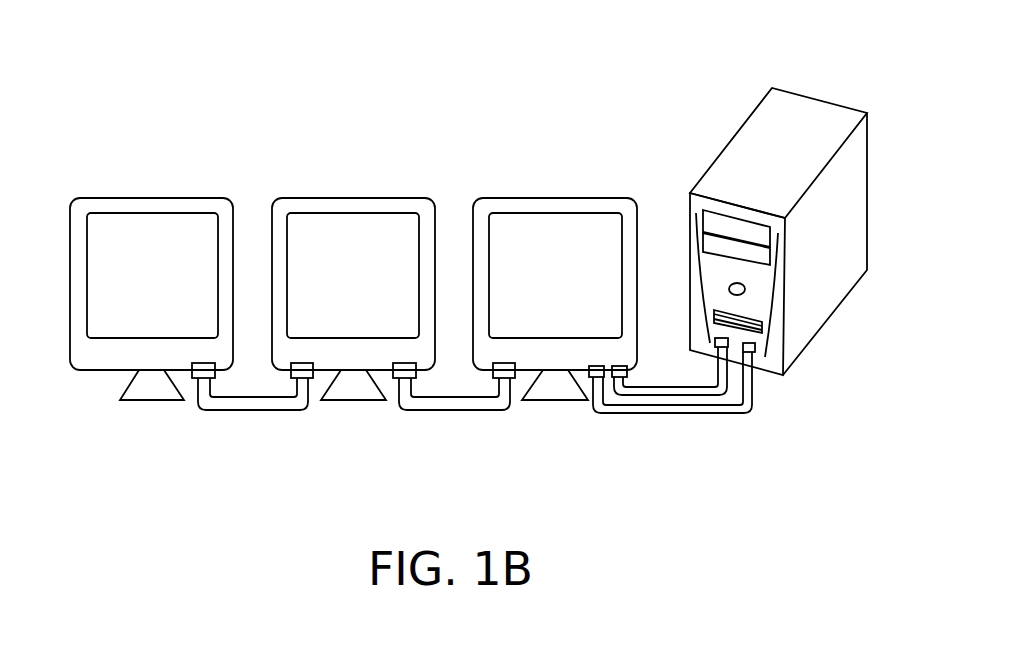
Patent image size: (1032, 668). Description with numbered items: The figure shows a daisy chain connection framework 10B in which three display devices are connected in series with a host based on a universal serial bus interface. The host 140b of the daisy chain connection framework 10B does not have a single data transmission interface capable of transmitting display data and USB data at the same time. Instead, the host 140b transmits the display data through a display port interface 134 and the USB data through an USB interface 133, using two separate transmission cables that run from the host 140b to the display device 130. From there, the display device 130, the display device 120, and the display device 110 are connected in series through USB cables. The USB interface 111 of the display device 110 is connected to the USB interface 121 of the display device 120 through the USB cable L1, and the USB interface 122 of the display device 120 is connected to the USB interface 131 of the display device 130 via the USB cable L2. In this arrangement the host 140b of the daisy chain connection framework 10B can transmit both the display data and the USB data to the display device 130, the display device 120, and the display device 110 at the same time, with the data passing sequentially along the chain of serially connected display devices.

The daisy chain connection framework 10B is at (815, 557).
The display device 110 is at (150, 198).
The USB interface 111 is at (203, 363).
The display device 120 is at (352, 198).
The USB interface 121 is at (300, 363).
The USB interface 122 is at (403, 363).
The display device 130 is at (555, 198).
The USB interface 131 is at (503, 363).
The USB interface 133 is at (598, 366).
The display port interface 134 is at (618, 366).
The host 140b is at (818, 98).
The USB cable L1 is at (252, 412).
The USB cable L2 is at (455, 412).